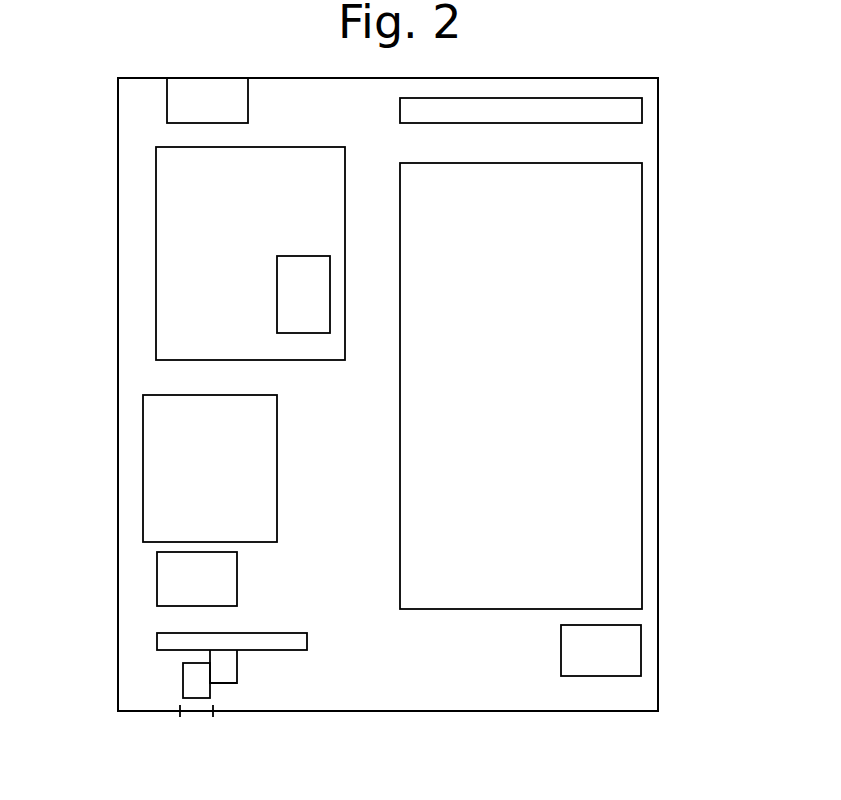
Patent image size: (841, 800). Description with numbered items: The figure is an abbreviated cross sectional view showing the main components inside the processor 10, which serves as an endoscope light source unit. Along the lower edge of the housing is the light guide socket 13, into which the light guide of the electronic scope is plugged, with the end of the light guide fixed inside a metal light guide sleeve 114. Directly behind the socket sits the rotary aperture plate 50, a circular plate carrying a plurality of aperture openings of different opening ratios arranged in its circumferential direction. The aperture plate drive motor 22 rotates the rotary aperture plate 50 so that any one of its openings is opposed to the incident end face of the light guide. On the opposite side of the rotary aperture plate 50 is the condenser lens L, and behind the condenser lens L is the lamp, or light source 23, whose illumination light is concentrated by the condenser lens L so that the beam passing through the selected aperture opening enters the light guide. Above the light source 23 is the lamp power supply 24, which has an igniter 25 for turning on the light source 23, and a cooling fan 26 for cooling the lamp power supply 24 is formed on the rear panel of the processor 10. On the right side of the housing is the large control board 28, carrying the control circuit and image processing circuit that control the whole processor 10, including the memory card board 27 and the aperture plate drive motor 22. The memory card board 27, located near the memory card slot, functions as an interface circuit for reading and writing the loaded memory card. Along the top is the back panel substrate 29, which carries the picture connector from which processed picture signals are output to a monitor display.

The processor 10 is at (699, 258).
The cooling fan 26 is at (176, 102).
The back panel substrate 29 is at (634, 111).
The lamp power supply 24 is at (170, 308).
The igniter 25 is at (282, 262).
The control board 28 is at (612, 373).
The lamp (light source) 23 is at (148, 445).
The condenser lens L is at (165, 572).
The rotary aperture plate 50 is at (160, 643).
The aperture plate drive motor 22 is at (235, 680).
The light guide sleeve 114 is at (188, 685).
The light guide socket 13 is at (197, 712).
The memory card board 27 is at (632, 650).